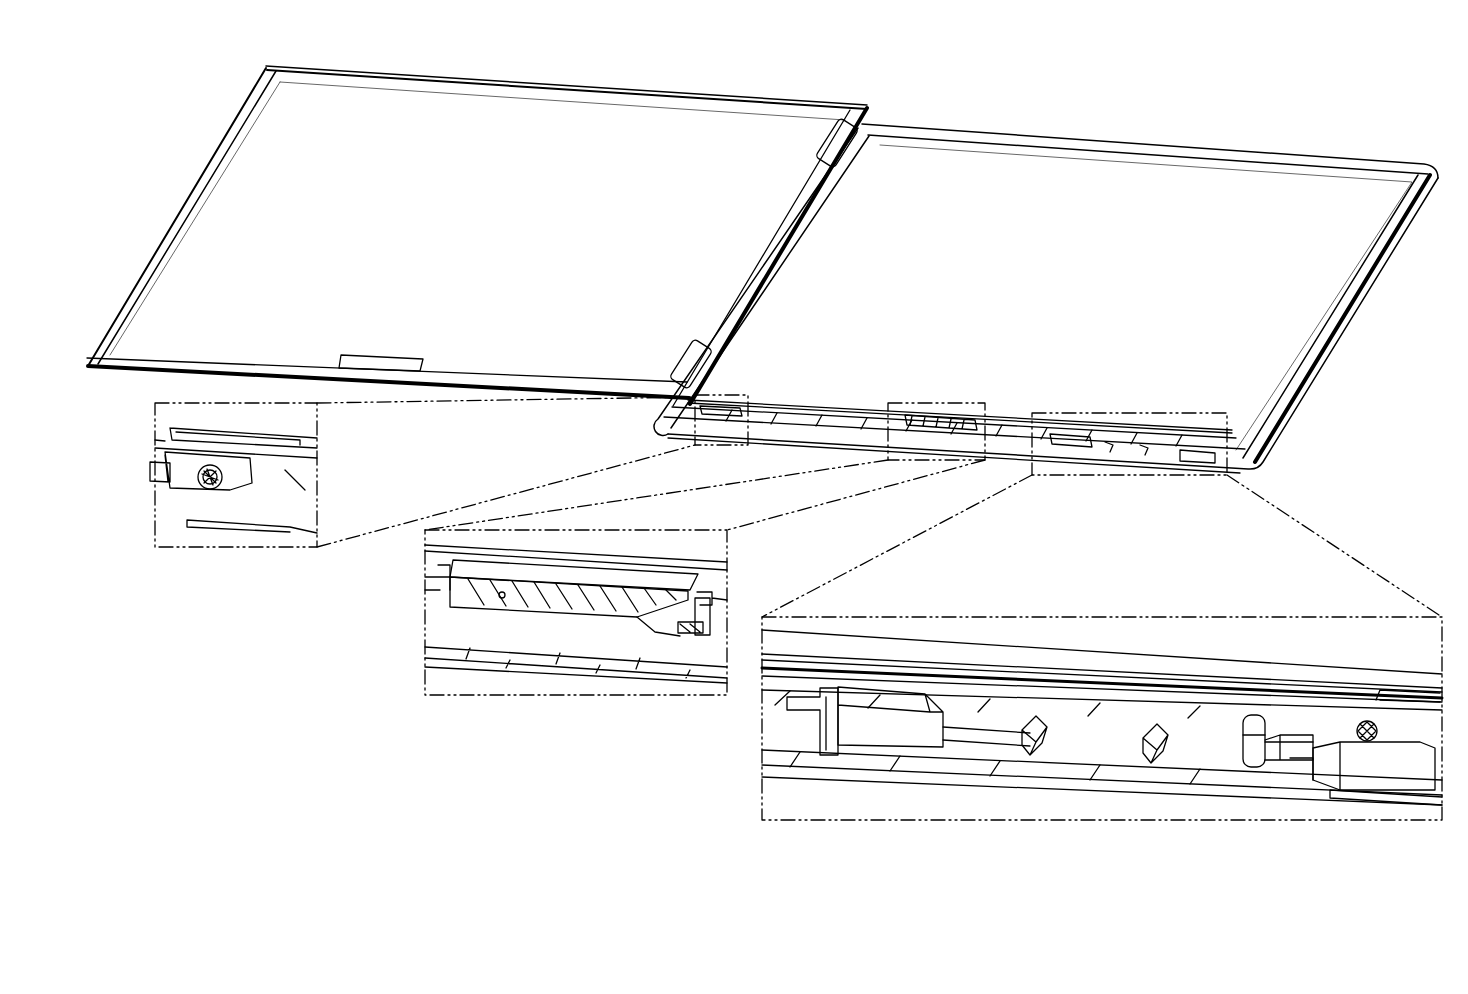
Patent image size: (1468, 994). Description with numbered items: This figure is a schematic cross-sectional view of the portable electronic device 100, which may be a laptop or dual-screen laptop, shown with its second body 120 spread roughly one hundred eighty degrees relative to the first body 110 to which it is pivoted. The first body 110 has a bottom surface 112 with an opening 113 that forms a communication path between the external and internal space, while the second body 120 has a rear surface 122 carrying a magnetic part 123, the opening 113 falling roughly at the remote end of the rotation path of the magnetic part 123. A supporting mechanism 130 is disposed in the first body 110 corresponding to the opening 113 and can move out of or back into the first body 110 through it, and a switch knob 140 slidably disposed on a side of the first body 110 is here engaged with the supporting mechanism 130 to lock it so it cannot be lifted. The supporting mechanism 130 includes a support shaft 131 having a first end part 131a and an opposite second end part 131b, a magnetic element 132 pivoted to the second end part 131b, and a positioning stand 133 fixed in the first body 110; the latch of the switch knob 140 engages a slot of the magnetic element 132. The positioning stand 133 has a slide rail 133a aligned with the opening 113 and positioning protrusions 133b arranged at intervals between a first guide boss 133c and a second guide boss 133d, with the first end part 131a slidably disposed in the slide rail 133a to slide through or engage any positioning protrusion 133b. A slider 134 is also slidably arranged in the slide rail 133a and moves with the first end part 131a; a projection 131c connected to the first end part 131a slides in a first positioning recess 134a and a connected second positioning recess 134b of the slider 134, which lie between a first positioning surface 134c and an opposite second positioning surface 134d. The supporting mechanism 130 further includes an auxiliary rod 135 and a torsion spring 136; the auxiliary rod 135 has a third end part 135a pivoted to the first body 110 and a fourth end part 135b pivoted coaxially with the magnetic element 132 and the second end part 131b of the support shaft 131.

The portable electronic device 100 is at (767, 492).
The first body 110 is at (763, 448).
The bottom surface 112 is at (985, 175).
The opening 113 is at (180, 425).
The second body 120 is at (477, 224).
The rear surface 122 is at (562, 106).
The magnetic part 123 is at (352, 353).
The supporting mechanism 130 is at (664, 607).
The support shaft 131 is at (1102, 716).
The first end part 131a is at (1335, 705).
The second end part 131b is at (665, 630).
The projection 131c is at (1380, 760).
The magnetic element 132 is at (530, 607).
The positioning stand 133 is at (1027, 712).
The slide rail 133a is at (1112, 725).
The positioning protrusions 133b is at (1035, 745).
The first guide boss 133c is at (1300, 760).
The second guide boss 133d is at (858, 730).
The slider 134 is at (1276, 706).
The first positioning recess 134a is at (1290, 745).
The second positioning recess 134b is at (1255, 718).
The first positioning surface 134c is at (1372, 742).
The second positioning surface 134d is at (1290, 762).
The auxiliary rod 135 is at (264, 536).
The third end part 135a is at (215, 530).
The fourth end part 135b is at (445, 568).
The torsion spring 136 is at (196, 480).
The switch knob 140 is at (703, 636).